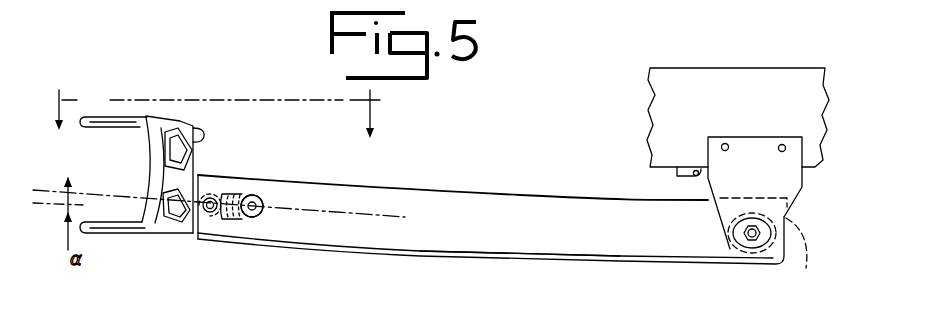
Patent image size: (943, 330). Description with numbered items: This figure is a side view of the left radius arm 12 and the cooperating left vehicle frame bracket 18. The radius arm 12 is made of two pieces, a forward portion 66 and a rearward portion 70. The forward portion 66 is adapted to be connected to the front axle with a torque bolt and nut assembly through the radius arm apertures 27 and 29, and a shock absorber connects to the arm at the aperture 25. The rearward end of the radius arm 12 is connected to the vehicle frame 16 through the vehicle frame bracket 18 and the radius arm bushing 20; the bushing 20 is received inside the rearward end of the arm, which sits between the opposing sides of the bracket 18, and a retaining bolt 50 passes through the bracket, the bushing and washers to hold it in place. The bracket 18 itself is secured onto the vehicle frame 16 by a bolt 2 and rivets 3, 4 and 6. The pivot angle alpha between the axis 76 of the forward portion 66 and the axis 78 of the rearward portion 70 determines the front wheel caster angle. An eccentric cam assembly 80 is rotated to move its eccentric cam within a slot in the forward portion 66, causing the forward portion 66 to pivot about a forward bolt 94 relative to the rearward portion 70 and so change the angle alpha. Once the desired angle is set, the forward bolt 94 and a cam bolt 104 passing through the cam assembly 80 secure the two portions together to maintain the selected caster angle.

The bolt 2 is at (680, 176).
The rivet 3 is at (725, 143).
The rivet 4 is at (783, 144).
The rivet 6 is at (215, 122).
The radius arm 12 is at (483, 172).
The vehicle frame 16 is at (736, 68).
The vehicle frame bracket 18 is at (803, 187).
The radius arm bushing 20 is at (805, 255).
The aperture 25 is at (205, 139).
The radius arm aperture 27 is at (93, 126).
The radius arm aperture 29 is at (96, 235).
The retaining bolt 50 is at (751, 244).
The forward portion 66 is at (135, 236).
The rearward portion 70 is at (361, 258).
The axis 76 is at (55, 188).
The axis 78 is at (45, 206).
The eccentric cam assembly 80 is at (262, 187).
The forward bolt 94 is at (213, 213).
The cam bolt 104 is at (255, 217).